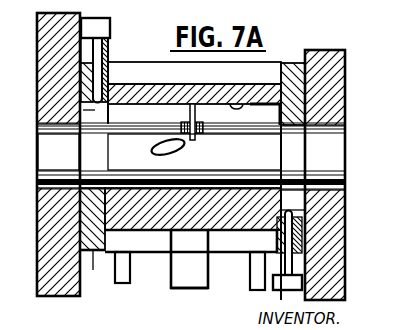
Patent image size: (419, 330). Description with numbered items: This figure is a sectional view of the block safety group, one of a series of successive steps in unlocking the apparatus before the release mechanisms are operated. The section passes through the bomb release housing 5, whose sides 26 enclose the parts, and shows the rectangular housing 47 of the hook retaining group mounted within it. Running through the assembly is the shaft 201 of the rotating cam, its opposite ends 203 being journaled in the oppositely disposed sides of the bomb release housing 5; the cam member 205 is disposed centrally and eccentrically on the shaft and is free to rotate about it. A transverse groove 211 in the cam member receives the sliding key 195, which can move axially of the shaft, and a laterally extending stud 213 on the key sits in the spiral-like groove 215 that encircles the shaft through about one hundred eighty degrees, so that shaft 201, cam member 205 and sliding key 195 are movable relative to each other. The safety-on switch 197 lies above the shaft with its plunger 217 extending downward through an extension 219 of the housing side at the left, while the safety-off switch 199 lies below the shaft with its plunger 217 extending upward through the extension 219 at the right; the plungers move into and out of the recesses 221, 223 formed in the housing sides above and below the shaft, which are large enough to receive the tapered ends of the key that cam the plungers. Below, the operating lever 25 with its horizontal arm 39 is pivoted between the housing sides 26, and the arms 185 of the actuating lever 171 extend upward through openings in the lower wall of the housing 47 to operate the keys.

The bomb release housing 5 is at (35, 42).
The bomb release housing sides 26 is at (44, 50).
The housing 47 is at (293, 67).
The actuating lever 171 is at (111, 274).
The arms 185 is at (125, 285).
The sliding key 195 is at (127, 108).
The safety-on switch 197 is at (103, 23).
The safety-off switch 199 is at (293, 288).
The shaft 201 is at (290, 166).
The opposite ends 203 is at (46, 148).
The cam member 205 is at (141, 174).
The transverse groove 211 is at (238, 106).
The stud 213 is at (195, 110).
The spiral-like groove 215 is at (188, 158).
The plunger 217 is at (103, 60).
The extensions 219 is at (97, 80).
The recess 221 is at (42, 111).
The recess 223 is at (330, 205).
The operating lever 25 is at (171, 296).
The arm 39 is at (193, 278).